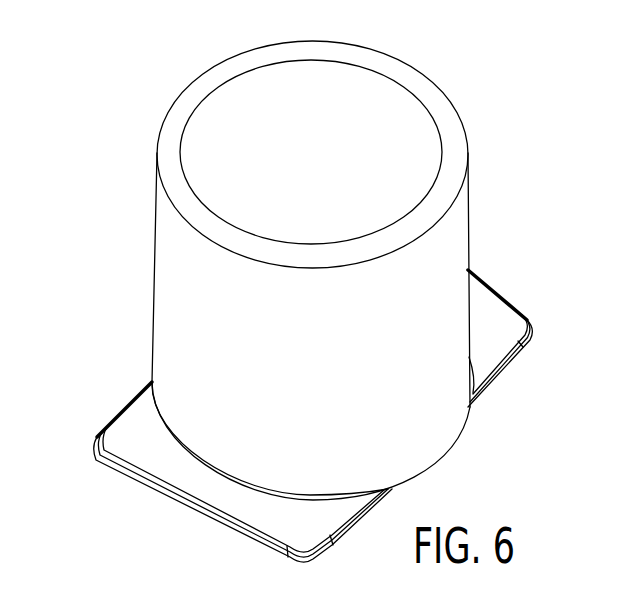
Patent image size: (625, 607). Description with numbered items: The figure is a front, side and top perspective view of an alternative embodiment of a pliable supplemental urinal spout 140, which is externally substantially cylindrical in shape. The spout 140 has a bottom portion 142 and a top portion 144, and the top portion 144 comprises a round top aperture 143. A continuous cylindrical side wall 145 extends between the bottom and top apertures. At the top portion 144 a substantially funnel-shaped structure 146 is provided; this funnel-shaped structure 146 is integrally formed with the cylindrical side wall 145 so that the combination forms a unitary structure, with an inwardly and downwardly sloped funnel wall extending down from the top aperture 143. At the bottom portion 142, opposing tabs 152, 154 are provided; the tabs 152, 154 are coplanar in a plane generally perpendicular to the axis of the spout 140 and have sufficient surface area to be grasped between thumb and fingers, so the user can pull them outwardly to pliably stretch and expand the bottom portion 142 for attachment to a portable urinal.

The pliable supplemental urinal spout 140 is at (80, 226).
The bottom portion 142 is at (163, 365).
The round top aperture 143 is at (378, 75).
The top portion 144 is at (425, 255).
The continuous cylindrical side wall 145 is at (315, 370).
The funnel-shaped structure 146 is at (242, 105).
The tab 152 is at (128, 438).
The tab 154 is at (493, 322).